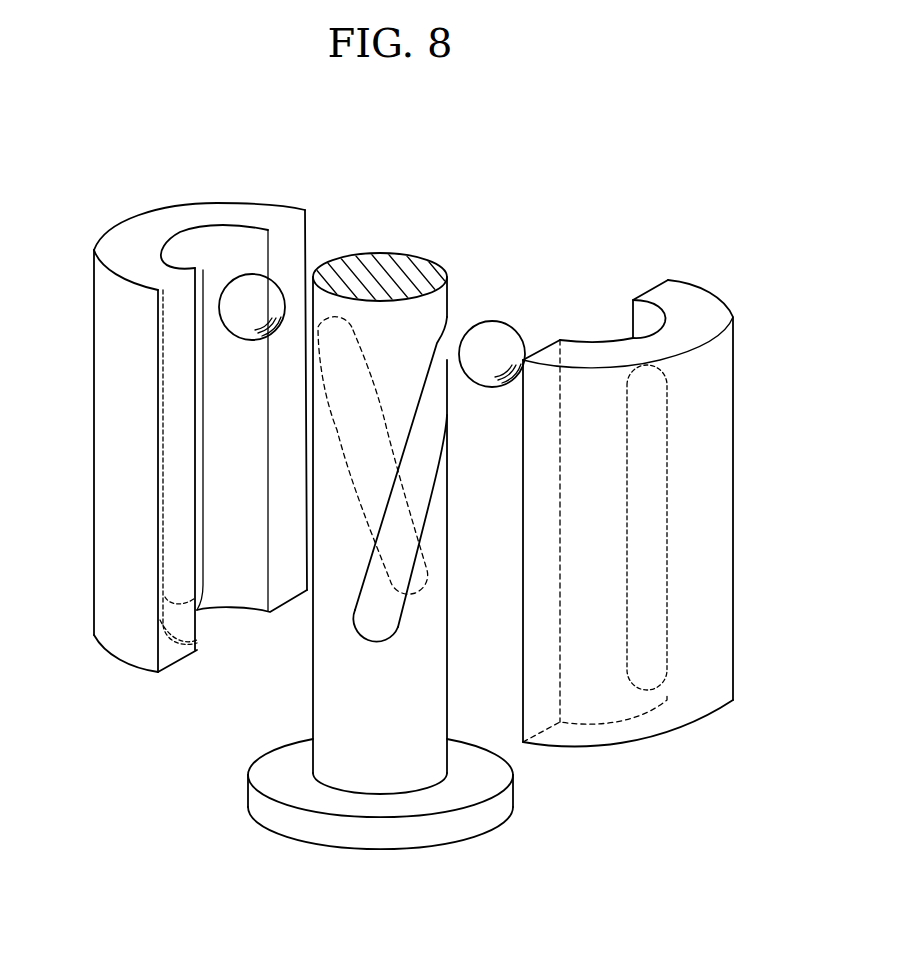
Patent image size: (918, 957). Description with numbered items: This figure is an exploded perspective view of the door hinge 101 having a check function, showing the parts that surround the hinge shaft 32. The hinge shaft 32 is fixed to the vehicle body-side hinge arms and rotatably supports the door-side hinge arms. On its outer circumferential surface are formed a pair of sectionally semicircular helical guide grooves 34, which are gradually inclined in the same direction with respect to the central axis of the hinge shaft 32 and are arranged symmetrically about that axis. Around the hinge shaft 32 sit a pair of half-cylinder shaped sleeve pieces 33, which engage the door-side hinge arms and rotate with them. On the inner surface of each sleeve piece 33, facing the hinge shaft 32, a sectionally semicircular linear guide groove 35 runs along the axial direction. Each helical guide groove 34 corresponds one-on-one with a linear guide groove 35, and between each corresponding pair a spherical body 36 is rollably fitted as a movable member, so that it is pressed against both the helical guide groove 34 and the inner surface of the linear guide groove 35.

The door hinge having a check function 101 is at (637, 187).
The hinge shaft 32 is at (370, 757).
The sleeve piece 33 is at (120, 627).
The helical guide groove 34 is at (368, 370).
The linear guide groove 35 is at (168, 448).
The spherical body 36 is at (240, 292).